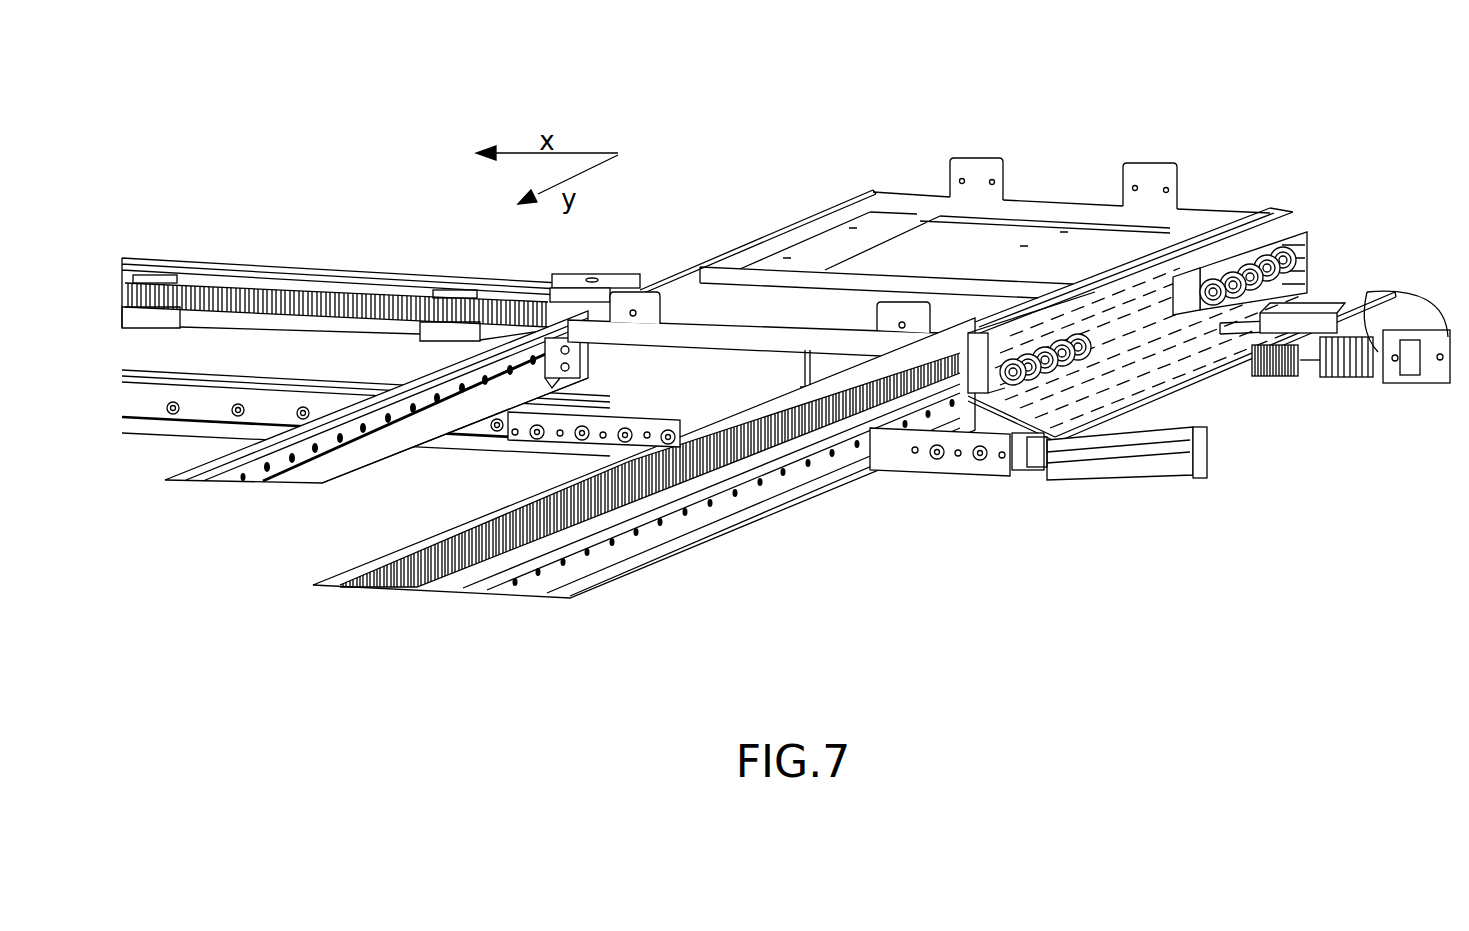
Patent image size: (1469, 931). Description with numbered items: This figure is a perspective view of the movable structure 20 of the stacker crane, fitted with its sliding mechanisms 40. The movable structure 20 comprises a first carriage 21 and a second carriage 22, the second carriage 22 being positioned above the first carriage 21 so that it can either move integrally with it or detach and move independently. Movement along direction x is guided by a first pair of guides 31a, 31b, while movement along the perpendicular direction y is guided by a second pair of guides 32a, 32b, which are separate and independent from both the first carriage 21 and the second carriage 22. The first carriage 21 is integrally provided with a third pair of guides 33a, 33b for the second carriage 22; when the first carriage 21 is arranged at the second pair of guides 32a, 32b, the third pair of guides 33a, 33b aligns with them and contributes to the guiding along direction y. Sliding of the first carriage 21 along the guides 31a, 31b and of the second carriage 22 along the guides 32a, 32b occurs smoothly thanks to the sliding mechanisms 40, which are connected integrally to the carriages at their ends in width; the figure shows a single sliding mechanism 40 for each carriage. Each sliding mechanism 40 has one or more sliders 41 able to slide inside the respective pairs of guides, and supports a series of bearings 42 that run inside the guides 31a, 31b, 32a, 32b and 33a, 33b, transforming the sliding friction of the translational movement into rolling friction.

The movable structure 20 is at (1075, 158).
The first carriage 21 is at (1193, 430).
The second carriage 22 is at (805, 302).
The first guide 31a is at (162, 430).
The first guide 31b is at (192, 272).
The second guide 32a is at (607, 522).
The second guide 32b is at (280, 462).
The third guide 33a is at (1300, 260).
The third guide 33b is at (523, 363).
The sliding mechanism 40 is at (1176, 342).
The slider 41 is at (549, 458).
The bearing 42 is at (1063, 323).